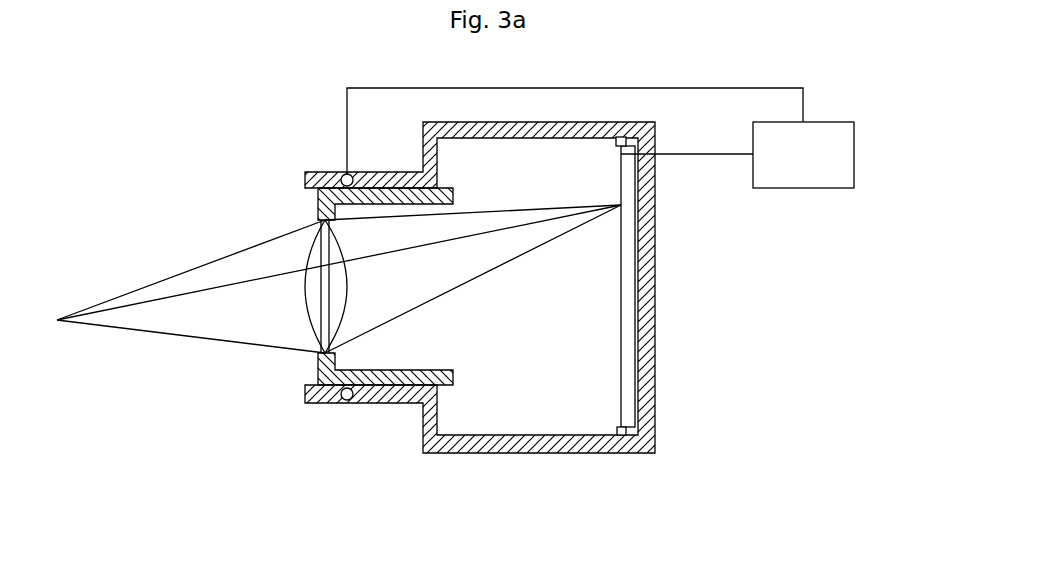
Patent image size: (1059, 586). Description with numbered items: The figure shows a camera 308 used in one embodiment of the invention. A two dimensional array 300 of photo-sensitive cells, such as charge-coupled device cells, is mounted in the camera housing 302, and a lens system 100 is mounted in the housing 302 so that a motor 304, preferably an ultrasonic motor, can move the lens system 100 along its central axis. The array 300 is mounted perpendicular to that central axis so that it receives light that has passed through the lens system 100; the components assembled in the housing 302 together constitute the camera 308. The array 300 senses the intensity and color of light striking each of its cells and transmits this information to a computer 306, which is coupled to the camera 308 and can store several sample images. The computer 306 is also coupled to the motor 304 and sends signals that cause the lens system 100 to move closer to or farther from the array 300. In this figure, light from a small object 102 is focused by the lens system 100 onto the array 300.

The lens system 100 is at (317, 255).
The object 102 is at (57, 320).
The array 300 is at (622, 353).
The camera housing 302 is at (592, 445).
The motor 304 is at (343, 175).
The computer 306 is at (819, 137).
The camera 308 is at (422, 418).